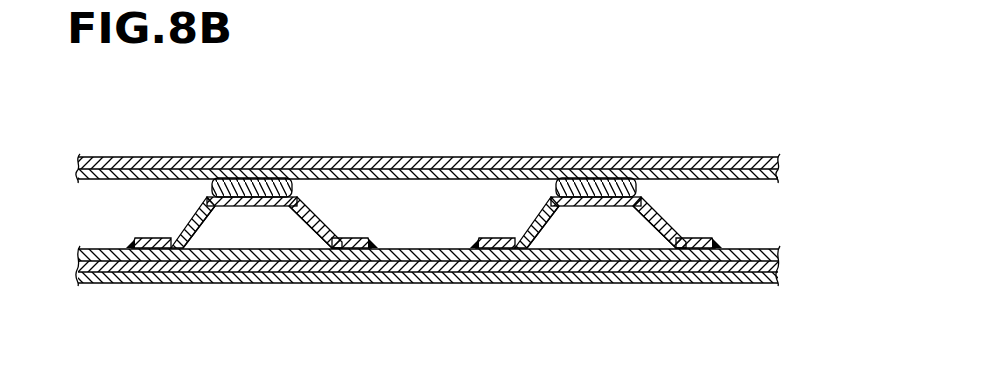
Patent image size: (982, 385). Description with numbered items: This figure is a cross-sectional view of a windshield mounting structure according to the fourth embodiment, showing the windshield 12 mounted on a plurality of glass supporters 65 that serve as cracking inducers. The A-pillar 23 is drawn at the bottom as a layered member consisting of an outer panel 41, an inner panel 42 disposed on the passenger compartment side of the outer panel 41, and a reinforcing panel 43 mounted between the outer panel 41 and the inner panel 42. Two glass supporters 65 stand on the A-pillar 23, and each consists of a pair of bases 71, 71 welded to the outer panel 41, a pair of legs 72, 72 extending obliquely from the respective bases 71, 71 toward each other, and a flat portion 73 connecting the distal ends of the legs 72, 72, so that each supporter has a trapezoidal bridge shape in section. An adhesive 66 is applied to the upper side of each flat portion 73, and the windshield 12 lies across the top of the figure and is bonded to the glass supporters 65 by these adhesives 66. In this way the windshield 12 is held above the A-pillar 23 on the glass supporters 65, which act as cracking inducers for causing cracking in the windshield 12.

The windshield 12 is at (397, 135).
The A-pillar 23 is at (125, 312).
The outer panel 41 is at (96, 249).
The inner panel 42 is at (430, 283).
The reinforcing panel 43 is at (388, 283).
The glass supporter 65 is at (196, 186).
The adhesive 66 is at (298, 198).
The base 71 is at (152, 238).
The leg 72 is at (307, 226).
The flat portion 73 is at (247, 179).